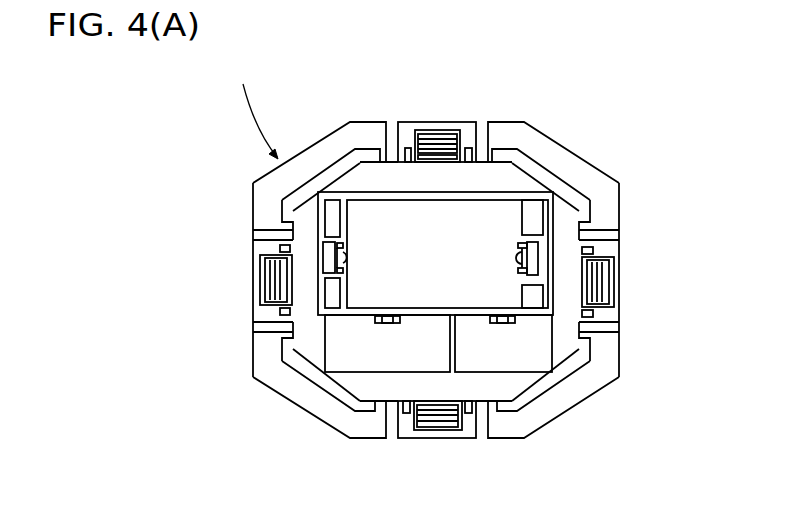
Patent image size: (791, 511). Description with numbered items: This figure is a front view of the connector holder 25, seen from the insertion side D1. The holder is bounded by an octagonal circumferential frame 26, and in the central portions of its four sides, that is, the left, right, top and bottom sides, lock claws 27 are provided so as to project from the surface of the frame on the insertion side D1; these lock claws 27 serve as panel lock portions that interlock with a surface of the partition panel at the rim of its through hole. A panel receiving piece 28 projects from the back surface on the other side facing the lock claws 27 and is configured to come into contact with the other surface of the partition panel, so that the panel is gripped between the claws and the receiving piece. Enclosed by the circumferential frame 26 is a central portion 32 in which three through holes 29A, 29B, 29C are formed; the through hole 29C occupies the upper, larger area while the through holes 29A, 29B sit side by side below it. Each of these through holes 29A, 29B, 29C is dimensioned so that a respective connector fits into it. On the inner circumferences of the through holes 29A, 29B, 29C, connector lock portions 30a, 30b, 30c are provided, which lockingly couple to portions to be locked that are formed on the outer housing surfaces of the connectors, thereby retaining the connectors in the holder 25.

The insertion side D1 is at (255, 110).
The connector holder 25 is at (584, 146).
The octagonal circumferential frame 26 is at (585, 173).
The lock claws 27 is at (441, 146).
The panel receiving piece 28 is at (407, 124).
The through hole 29A is at (338, 342).
The through hole 29B is at (533, 343).
The through hole 29C is at (483, 226).
The connector lock portion 30a is at (390, 324).
The connector lock portion 30b is at (500, 325).
The connector lock portion 30c is at (343, 251).
The central portion 32 is at (563, 215).